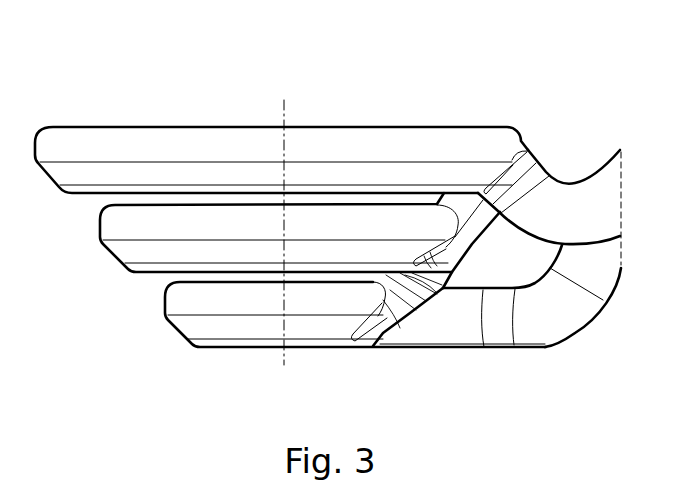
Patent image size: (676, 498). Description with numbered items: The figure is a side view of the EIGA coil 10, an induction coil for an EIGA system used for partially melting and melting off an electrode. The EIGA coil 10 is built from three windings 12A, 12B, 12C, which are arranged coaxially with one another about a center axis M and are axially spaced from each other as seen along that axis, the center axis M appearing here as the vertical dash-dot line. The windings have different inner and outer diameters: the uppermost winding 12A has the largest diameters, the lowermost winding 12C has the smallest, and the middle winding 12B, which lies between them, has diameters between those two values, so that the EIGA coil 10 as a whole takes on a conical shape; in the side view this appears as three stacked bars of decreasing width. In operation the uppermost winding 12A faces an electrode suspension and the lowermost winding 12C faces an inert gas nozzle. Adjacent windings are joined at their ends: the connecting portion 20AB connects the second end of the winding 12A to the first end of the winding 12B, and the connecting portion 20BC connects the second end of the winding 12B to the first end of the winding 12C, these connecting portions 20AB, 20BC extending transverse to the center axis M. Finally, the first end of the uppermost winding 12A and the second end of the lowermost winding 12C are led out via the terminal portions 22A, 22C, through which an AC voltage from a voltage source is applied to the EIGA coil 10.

The EIGA coil 10 is at (170, 77).
The center axis M is at (285, 112).
The uppermost winding 12A is at (402, 148).
The middle winding 12B is at (152, 249).
The lowermost winding 12C is at (240, 327).
The connecting portion 20AB is at (475, 220).
The connecting portion 20BC is at (403, 295).
The terminal portion 22A is at (570, 204).
The terminal portion 22C is at (482, 333).